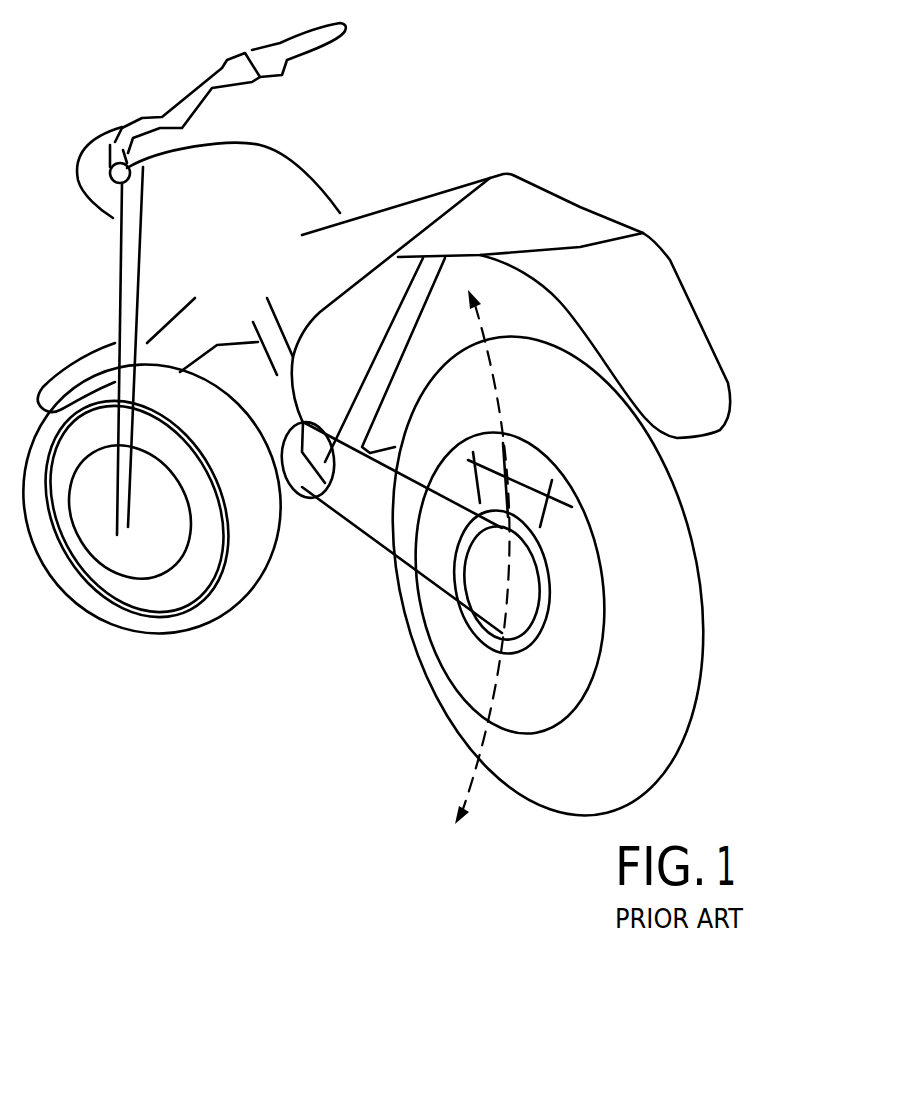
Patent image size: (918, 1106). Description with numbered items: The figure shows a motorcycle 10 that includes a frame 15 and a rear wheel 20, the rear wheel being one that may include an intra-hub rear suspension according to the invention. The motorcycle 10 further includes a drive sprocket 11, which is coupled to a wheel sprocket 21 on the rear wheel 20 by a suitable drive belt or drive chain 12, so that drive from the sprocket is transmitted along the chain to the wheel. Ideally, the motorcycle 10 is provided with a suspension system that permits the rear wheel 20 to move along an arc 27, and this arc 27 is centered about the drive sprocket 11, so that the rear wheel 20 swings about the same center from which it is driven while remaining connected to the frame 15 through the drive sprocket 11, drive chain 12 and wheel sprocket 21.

The motorcycle 10 is at (553, 118).
The drive sprocket 11 is at (300, 488).
The drive belt or drive chain 12 is at (387, 558).
The frame 15 is at (383, 352).
The rear wheel 20 is at (665, 602).
The wheel sprocket 21 is at (487, 610).
The arc 27 is at (482, 572).